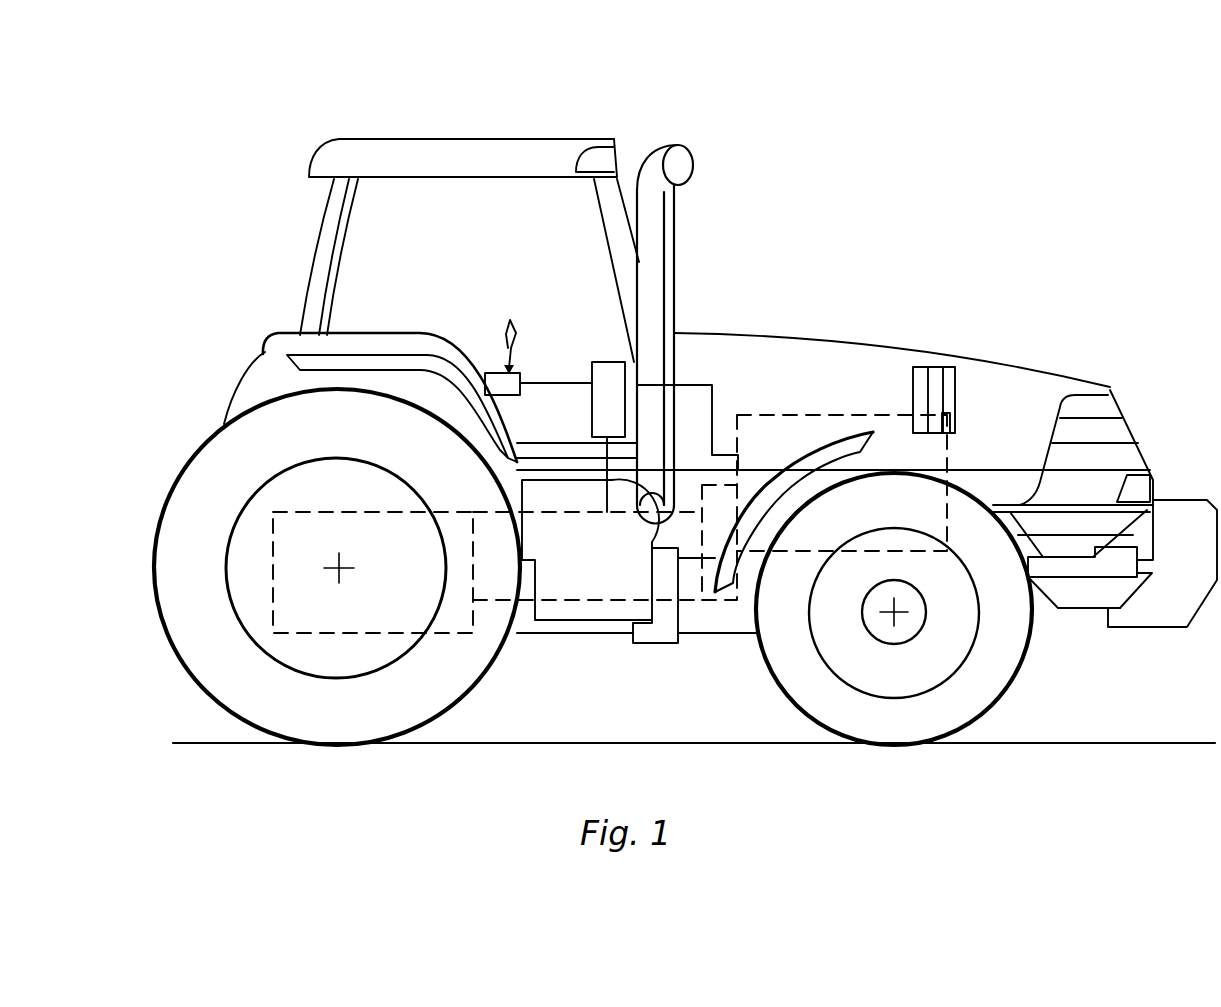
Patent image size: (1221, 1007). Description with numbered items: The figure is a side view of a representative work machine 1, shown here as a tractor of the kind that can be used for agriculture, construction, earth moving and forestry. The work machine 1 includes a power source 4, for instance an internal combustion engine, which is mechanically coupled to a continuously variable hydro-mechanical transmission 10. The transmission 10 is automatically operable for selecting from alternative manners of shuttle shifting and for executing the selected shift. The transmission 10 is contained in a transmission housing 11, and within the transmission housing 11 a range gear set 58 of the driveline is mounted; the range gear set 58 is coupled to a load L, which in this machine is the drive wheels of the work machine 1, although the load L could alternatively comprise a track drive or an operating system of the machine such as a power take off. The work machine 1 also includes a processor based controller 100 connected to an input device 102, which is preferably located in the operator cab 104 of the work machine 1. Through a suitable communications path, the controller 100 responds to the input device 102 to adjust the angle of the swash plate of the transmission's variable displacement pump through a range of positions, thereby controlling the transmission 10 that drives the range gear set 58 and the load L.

The work machine 1 is at (1023, 253).
The power source 4 is at (830, 414).
The continuously variable hydro-mechanical transmission 10 is at (600, 600).
The transmission housing 11 is at (692, 600).
The range gear set 58 is at (359, 612).
The processor based controller 100 is at (610, 362).
The input device 102 is at (514, 328).
The operator cab 104 is at (485, 138).
The load L is at (185, 670).